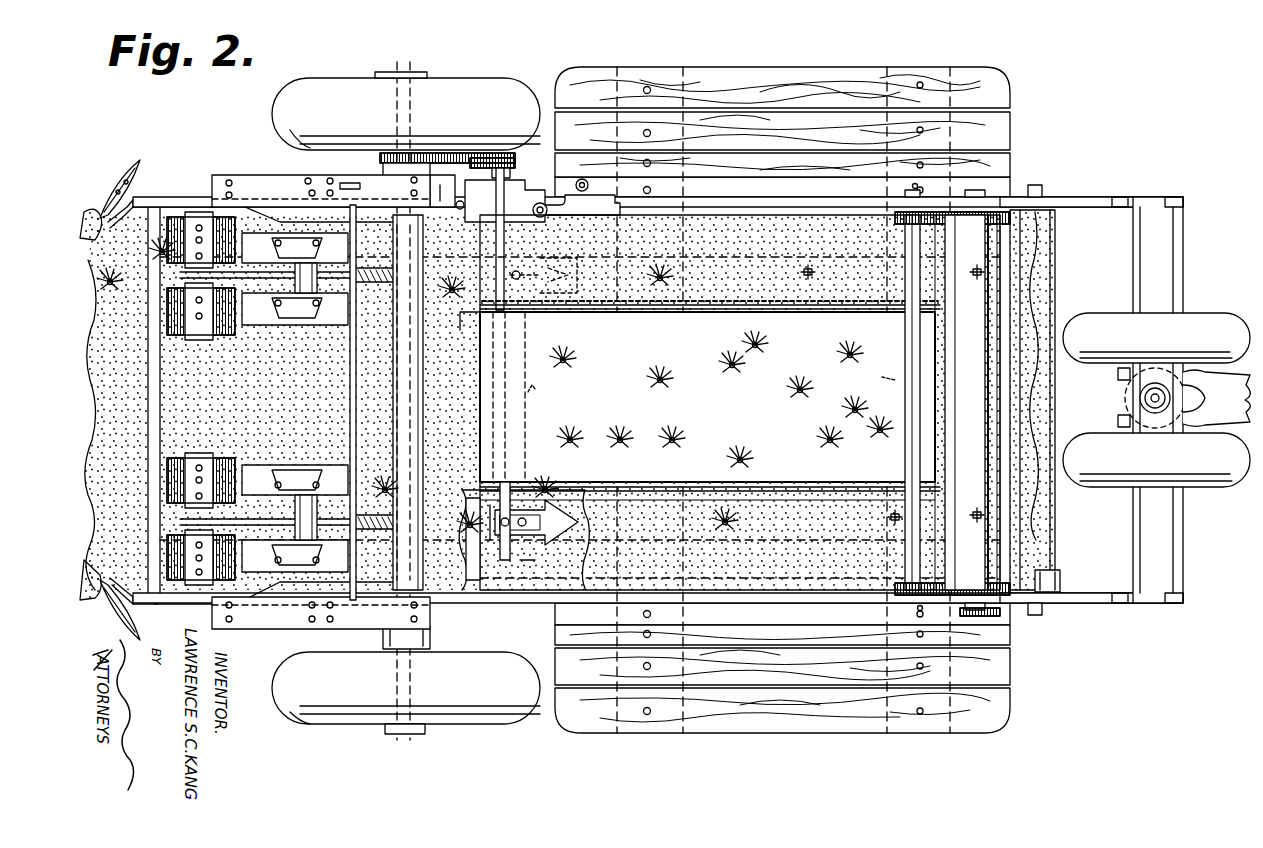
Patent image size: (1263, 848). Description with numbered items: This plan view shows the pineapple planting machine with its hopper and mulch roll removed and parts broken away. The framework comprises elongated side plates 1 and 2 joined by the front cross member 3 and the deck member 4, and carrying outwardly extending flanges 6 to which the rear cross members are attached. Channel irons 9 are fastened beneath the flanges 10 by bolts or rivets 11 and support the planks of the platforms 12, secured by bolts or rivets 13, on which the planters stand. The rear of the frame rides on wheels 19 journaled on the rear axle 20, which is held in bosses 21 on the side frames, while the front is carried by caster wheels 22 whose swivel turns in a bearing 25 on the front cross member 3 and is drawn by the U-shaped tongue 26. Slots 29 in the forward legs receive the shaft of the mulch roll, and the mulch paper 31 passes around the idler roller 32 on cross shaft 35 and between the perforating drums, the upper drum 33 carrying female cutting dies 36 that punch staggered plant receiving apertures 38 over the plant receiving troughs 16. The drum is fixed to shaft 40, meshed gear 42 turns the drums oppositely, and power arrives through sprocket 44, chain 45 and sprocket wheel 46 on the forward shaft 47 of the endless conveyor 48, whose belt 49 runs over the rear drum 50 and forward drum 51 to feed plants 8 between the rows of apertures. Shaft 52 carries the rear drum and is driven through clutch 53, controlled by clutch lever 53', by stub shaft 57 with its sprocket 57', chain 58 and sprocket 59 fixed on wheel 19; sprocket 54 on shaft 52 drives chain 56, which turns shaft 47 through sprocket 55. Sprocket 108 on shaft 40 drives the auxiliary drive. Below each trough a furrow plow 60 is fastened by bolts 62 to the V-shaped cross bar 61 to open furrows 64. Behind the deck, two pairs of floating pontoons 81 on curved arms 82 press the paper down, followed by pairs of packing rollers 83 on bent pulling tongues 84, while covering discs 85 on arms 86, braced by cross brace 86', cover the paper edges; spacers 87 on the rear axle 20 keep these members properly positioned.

The side plate 1 is at (1095, 603).
The side plate 2 is at (1078, 197).
The front cross member 3 is at (1135, 545).
The deck member 4 is at (575, 570).
The outwardly extending flanges 6 is at (265, 175).
The pineapple plants 8 is at (762, 522).
The channel irons 9 is at (700, 75).
The outwardly projecting flanges 10 is at (1032, 618).
The bolts or rivets 11 is at (652, 190).
The platforms 12 is at (800, 85).
The bolts or rivets 13 is at (650, 88).
The plant receiving trough 16 is at (780, 252).
The wheels 19 is at (478, 75).
The rear axle 20 is at (405, 70).
The bosses 21 is at (432, 185).
The front caster wheels 22 is at (1205, 313).
The bearing 25 is at (1125, 398).
The U-shaped tongue 26 is at (1215, 385).
The slots 29 is at (1162, 197).
The mulch paper web 31 is at (118, 380).
The idler roller 32 is at (1060, 576).
The upper perforating drum 33 is at (965, 402).
The cross shaft 35 is at (1035, 192).
The female cutting dies 36 is at (972, 285).
The plant receiving apertures 38 is at (815, 268).
The shaft 40 is at (982, 195).
The gear 42 is at (996, 250).
The sprocket 44 is at (995, 232).
The chain 45 is at (926, 186).
The sprocket wheel 46 is at (895, 216).
The forward shaft 47 is at (905, 268).
The endless conveyor 48 is at (695, 312).
The endless belt 49 is at (707, 397).
The rear drum 50 is at (543, 385).
The forward drum 51 is at (876, 377).
The shaft 52 is at (505, 250).
The clutch 53 is at (538, 194).
The clutch lever 53' is at (602, 185).
The sprocket 54 is at (462, 322).
The sprocket 55 is at (938, 305).
The chain 56 is at (730, 303).
The stub shaft 57 is at (505, 158).
The sprocket 57' is at (485, 176).
The chain 58 is at (470, 158).
The sprocket 59 is at (380, 158).
The furrow plow 60 is at (565, 262).
The V-shaped cross bar 61 is at (508, 542).
The bolts 62 is at (512, 482).
The furrows 64 is at (538, 500).
The floating pontoons 81 is at (295, 402).
The curved arm 82 is at (362, 285).
The packing rollers 83 is at (170, 245).
The pulling tongues 84 is at (185, 273).
The covering discs 85 is at (125, 170).
The arms 86 is at (160, 393).
The cross brace 86' is at (132, 378).
The spacers 87 is at (424, 240).
The sprocket 108 is at (960, 612).